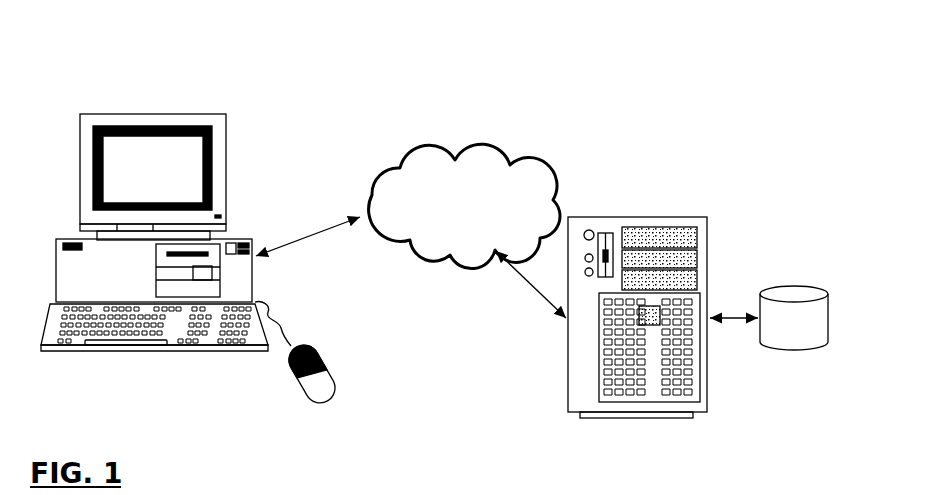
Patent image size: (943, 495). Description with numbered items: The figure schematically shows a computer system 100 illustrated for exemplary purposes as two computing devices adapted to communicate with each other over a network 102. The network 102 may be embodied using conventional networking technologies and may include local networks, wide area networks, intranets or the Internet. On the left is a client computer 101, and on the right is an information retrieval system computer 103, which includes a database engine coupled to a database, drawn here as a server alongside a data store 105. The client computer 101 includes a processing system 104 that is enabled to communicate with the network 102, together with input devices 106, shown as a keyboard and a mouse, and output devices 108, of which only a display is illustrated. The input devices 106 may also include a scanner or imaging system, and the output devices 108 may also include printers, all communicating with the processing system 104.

The computer system 100 is at (401, 136).
The client computer 101 is at (198, 224).
The network 102 is at (480, 201).
The information retrieval system computer 103 is at (668, 211).
The processing system 104 is at (88, 281).
The data store 105 is at (794, 278).
The input devices 106 is at (291, 371).
The output devices 108 is at (167, 177).